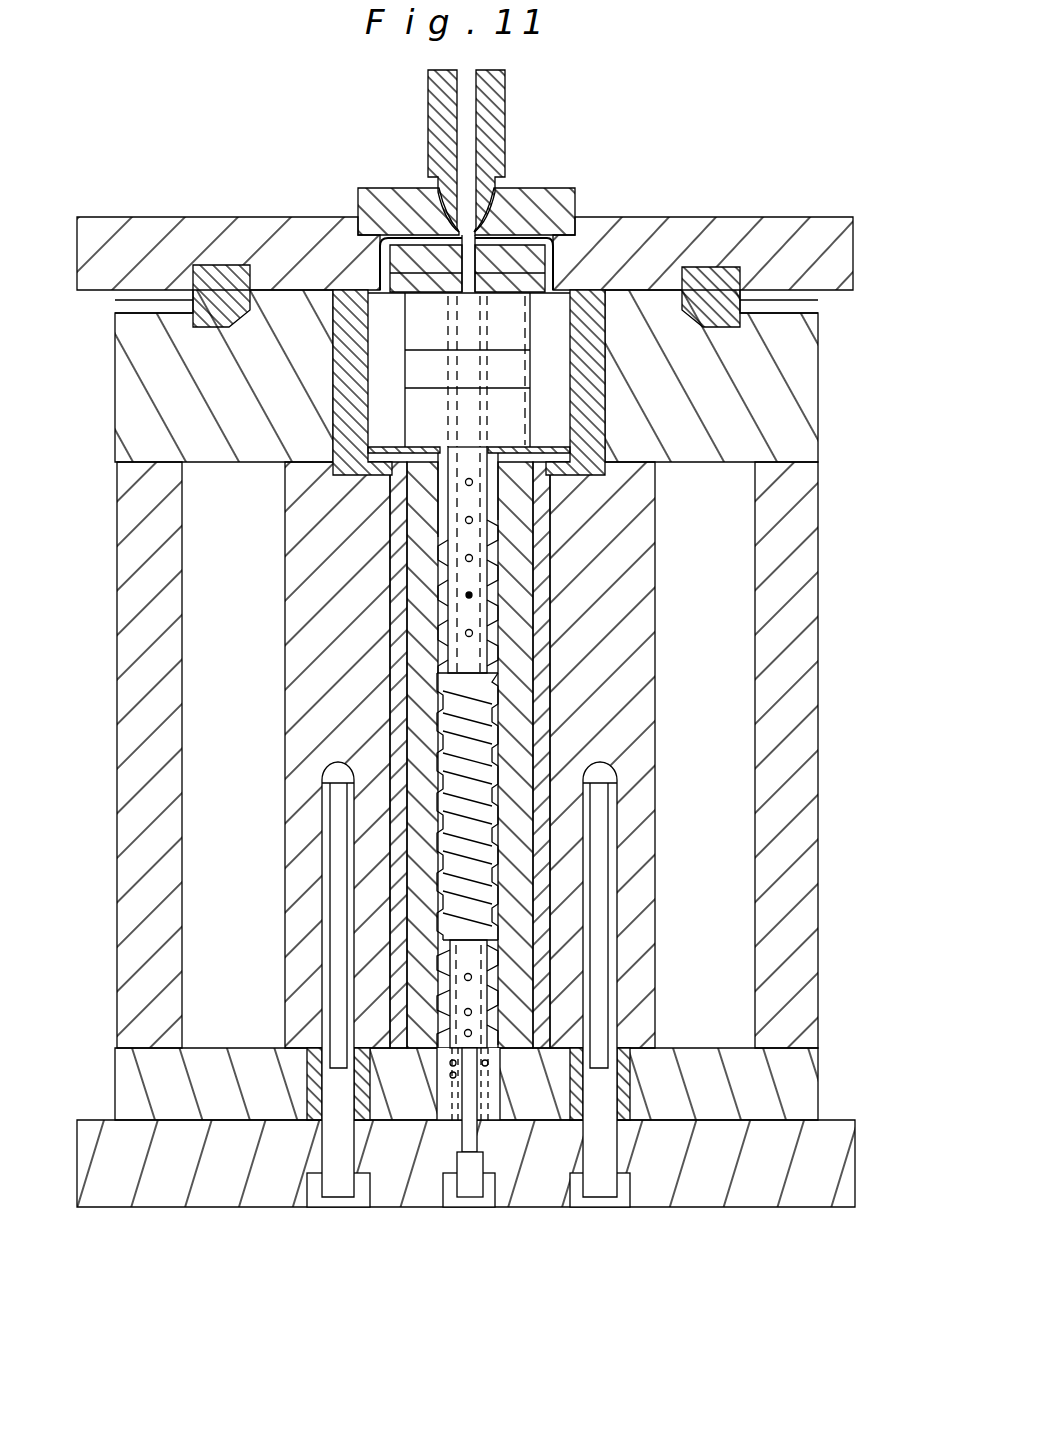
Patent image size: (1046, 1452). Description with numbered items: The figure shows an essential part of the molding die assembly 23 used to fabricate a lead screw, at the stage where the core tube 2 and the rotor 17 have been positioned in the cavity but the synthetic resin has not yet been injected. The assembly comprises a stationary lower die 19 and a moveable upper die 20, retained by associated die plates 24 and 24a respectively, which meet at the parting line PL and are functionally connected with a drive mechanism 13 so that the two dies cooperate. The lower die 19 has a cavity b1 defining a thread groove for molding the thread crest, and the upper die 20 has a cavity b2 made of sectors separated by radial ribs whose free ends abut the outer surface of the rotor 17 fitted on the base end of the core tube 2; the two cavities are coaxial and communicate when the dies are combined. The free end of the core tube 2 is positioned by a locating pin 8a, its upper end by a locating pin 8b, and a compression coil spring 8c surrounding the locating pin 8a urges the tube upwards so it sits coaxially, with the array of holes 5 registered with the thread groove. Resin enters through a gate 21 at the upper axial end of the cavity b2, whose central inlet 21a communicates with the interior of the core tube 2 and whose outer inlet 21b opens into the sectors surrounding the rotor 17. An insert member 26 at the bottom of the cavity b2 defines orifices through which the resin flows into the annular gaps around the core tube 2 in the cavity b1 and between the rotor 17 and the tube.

The core tube 2 is at (460, 530).
The cooling hole 5 is at (469, 593).
The locating pin 8a is at (470, 1088).
The locating pin 8b is at (470, 302).
The compression coil spring 8c is at (445, 1105).
The drive mechanism 13 is at (605, 936).
The rotor 17 is at (388, 345).
The lower die 19 is at (805, 600).
The upper die 20 is at (800, 410).
The gate 21 is at (517, 265).
The central inlet 21a is at (470, 240).
The outer inlet 21b is at (382, 253).
The die assembly 23 is at (728, 96).
The die plate 24 is at (735, 1207).
The die plate 24a is at (780, 233).
The insert member 26 is at (397, 447).
The cavity b1 is at (498, 712).
The cavity b2 is at (565, 364).
The parting line PL is at (826, 465).